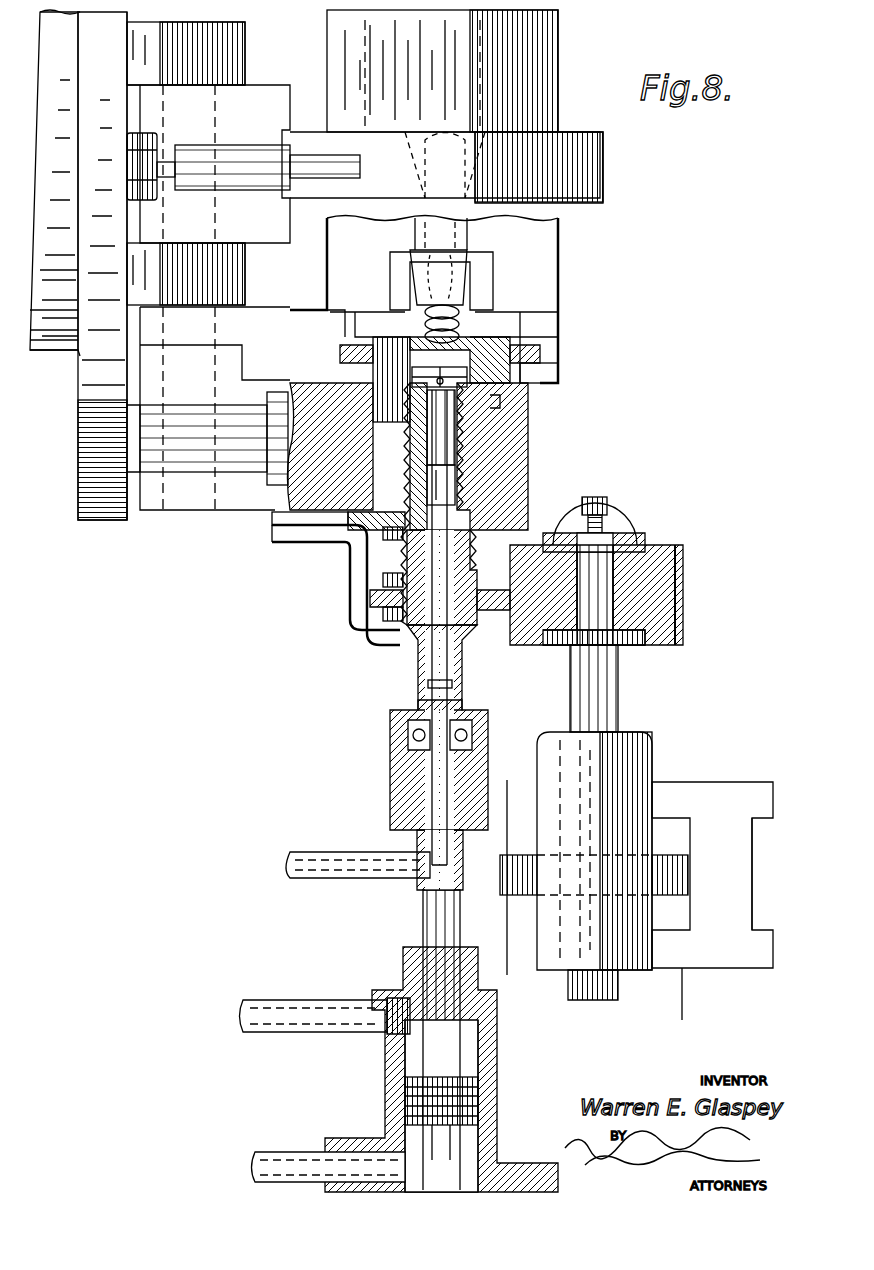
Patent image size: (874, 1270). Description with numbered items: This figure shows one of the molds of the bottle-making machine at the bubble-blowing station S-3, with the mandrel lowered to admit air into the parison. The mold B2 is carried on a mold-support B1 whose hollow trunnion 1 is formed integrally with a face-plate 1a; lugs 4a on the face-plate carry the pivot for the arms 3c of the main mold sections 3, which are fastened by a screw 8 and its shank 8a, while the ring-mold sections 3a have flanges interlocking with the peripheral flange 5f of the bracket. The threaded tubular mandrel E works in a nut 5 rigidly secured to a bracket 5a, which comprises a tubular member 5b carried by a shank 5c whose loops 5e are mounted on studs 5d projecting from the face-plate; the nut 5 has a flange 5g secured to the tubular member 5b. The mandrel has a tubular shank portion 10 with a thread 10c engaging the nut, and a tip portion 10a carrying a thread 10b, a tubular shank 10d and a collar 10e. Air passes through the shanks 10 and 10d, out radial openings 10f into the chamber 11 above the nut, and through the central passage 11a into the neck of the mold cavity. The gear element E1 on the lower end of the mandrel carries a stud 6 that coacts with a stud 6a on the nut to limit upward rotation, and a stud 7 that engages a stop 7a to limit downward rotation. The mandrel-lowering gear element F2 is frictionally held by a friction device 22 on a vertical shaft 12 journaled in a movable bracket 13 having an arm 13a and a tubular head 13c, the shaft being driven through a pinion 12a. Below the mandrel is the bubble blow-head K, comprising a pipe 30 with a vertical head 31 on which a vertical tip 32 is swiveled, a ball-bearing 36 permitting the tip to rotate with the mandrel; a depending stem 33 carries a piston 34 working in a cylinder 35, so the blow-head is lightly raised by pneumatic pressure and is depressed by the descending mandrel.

The mold-support B1 is at (78, 265).
The hollow trunnion 1 is at (48, 350).
The face-plate 1a is at (78, 465).
The lugs 4a is at (240, 58).
The arms of main mold sections 3c is at (275, 98).
The screw head 8 is at (140, 135).
The screw shank 8a is at (258, 140).
The main mold sections 3 is at (545, 70).
The mold B2 is at (464, 290).
The tip portion 10a is at (470, 305).
The thread 10b is at (425, 312).
The central passage 11a is at (470, 325).
The thread 10c is at (395, 395).
The loops or rings 5e is at (275, 385).
The shank 5c is at (300, 378).
The ring-mold sections 3a is at (540, 345).
The chamber 11 is at (470, 415).
The collar 10e is at (495, 360).
The peripheral flange 5f is at (540, 373).
The radial openings 10f is at (505, 402).
The nut 5 is at (500, 450).
The tubular shank 10d is at (455, 430).
The tubular shank portion 10 is at (452, 470).
The tubular member 5b is at (455, 490).
The flange 5g is at (528, 528).
The studs or bolts 5d is at (150, 510).
The bracket 5a is at (272, 524).
The stud 6a is at (383, 534).
The stud 6 is at (383, 580).
The gear element E1 is at (367, 595).
The stud 7 is at (383, 614).
The stop or finger 7a is at (388, 640).
The threaded tubular mandrel E is at (478, 630).
The bubble blow-head K is at (415, 690).
The vertical tip 32 is at (462, 680).
The ball-bearing 36 is at (408, 738).
The vertical head 31 is at (420, 838).
The pipe 30 is at (323, 880).
The depending stem 33 is at (435, 920).
The cylinder 35 is at (488, 1057).
The piston 34 is at (405, 1100).
The mandrel-lowering gear element F2 is at (683, 585).
The friction device 22 is at (630, 528).
The vertical shaft 12 is at (615, 690).
The movable bracket 13 is at (640, 800).
The arm 13a is at (772, 778).
The pinion 12a is at (680, 850).
The tubular head 13c is at (760, 885).
The station S-3 is at (684, 407).